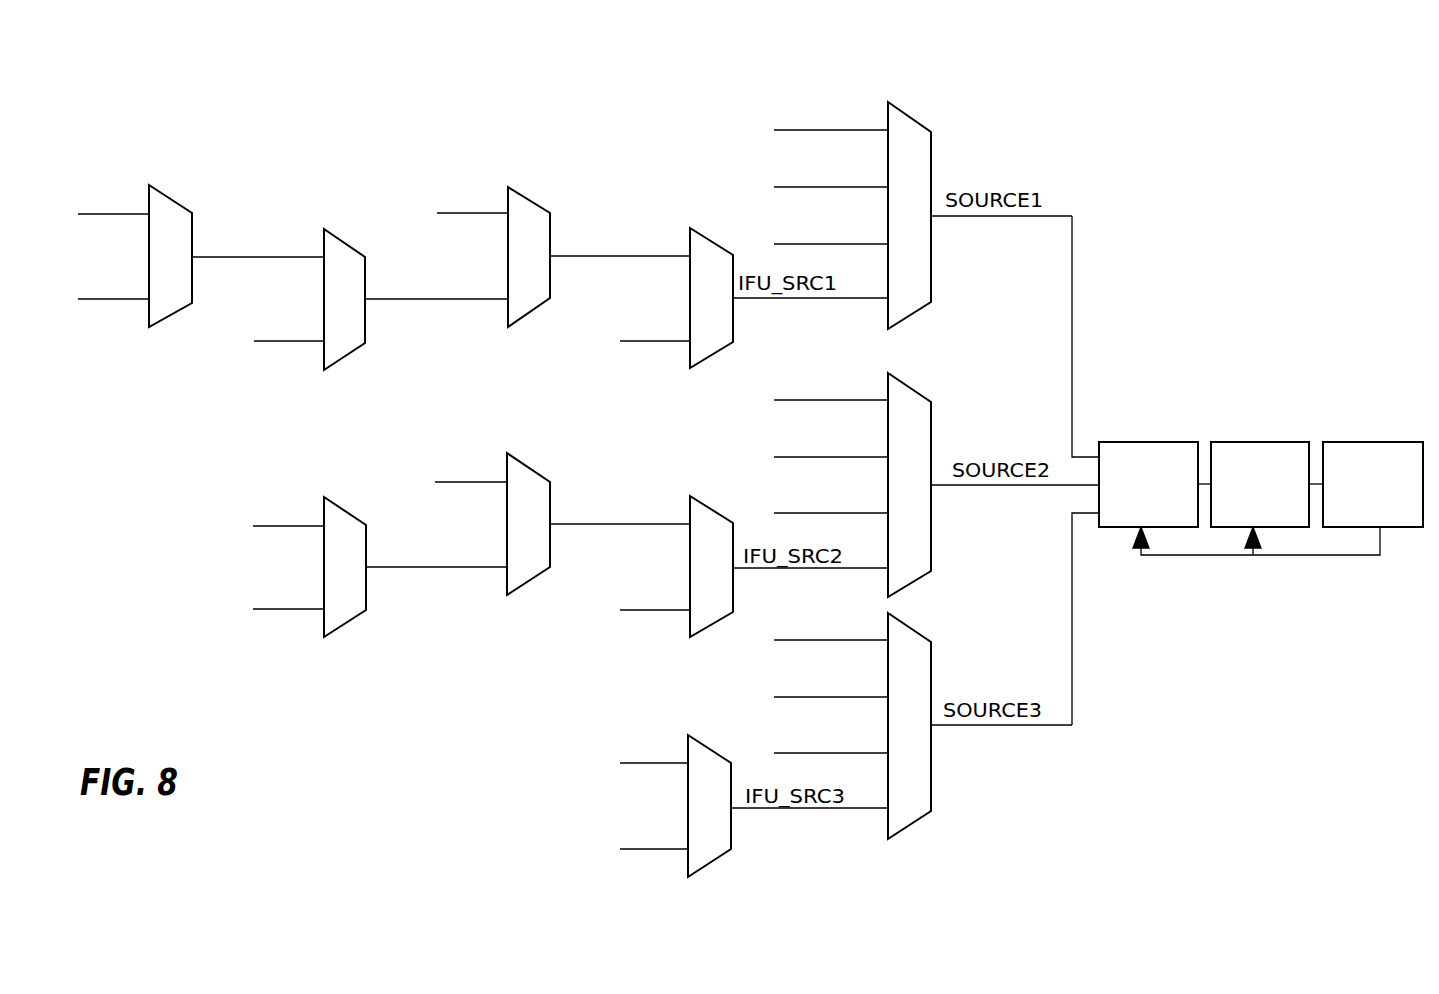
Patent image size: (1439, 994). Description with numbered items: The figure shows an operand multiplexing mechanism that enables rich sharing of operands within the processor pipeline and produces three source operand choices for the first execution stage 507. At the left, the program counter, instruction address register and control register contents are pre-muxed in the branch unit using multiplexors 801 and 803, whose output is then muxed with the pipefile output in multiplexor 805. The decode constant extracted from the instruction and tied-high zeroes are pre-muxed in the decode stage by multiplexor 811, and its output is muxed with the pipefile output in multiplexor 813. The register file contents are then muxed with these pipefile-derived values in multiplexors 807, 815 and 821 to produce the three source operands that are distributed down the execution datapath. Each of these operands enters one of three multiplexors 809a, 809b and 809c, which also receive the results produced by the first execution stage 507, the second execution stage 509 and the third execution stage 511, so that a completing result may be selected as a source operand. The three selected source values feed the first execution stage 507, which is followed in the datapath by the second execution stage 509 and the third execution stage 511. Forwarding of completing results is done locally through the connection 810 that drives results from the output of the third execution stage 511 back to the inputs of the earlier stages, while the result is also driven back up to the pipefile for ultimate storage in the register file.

The multiplexor 801 is at (172, 222).
The multiplexor 803 is at (333, 248).
The multiplexor 805 is at (535, 217).
The multiplexor 807 is at (695, 240).
The multiplexor 809a is at (917, 153).
The multiplexor 809b is at (917, 423).
The multiplexor 809c is at (917, 663).
The multiplexor 811 is at (352, 612).
The multiplexor 813 is at (522, 573).
The multiplexor 815 is at (722, 527).
The multiplexor 821 is at (725, 768).
The first execution stage 507 is at (1175, 450).
The second execution stage 509 is at (1258, 450).
The third execution stage 511 is at (1370, 450).
The forwarding connection 810 is at (1290, 567).